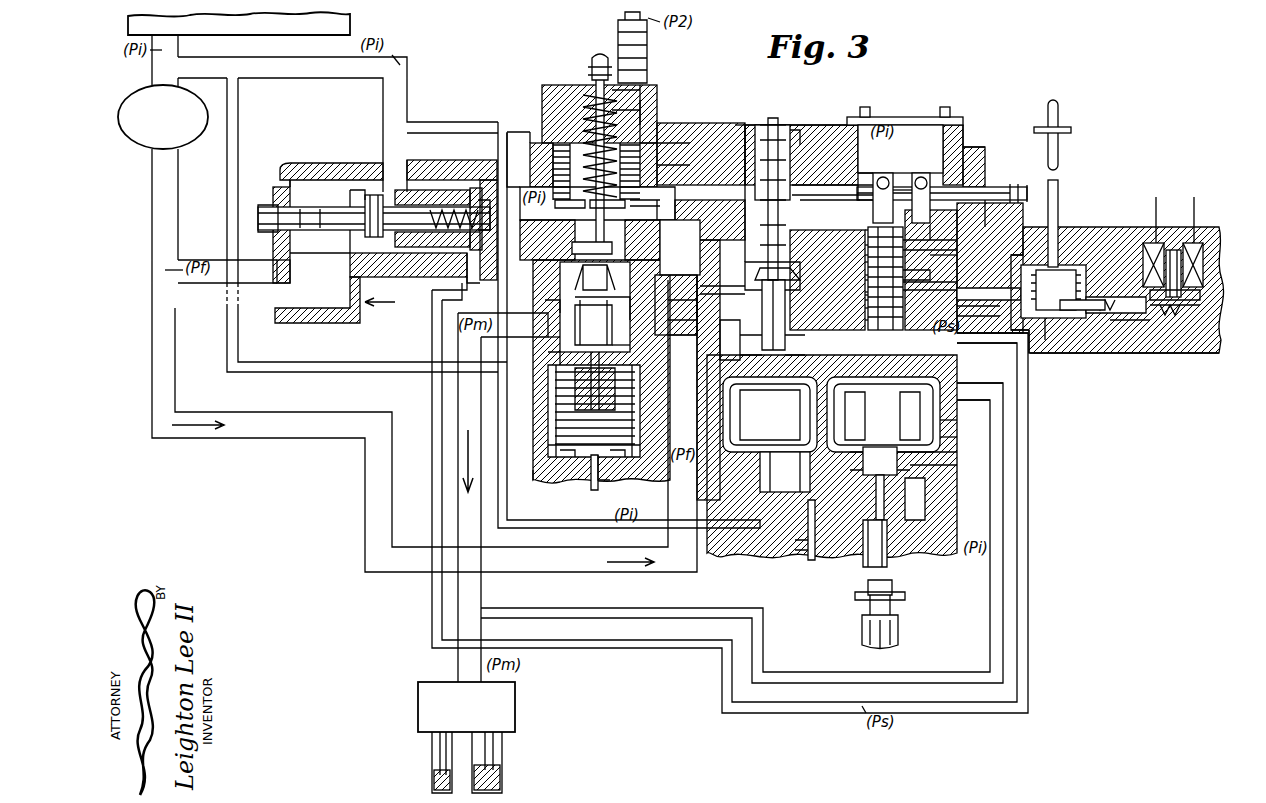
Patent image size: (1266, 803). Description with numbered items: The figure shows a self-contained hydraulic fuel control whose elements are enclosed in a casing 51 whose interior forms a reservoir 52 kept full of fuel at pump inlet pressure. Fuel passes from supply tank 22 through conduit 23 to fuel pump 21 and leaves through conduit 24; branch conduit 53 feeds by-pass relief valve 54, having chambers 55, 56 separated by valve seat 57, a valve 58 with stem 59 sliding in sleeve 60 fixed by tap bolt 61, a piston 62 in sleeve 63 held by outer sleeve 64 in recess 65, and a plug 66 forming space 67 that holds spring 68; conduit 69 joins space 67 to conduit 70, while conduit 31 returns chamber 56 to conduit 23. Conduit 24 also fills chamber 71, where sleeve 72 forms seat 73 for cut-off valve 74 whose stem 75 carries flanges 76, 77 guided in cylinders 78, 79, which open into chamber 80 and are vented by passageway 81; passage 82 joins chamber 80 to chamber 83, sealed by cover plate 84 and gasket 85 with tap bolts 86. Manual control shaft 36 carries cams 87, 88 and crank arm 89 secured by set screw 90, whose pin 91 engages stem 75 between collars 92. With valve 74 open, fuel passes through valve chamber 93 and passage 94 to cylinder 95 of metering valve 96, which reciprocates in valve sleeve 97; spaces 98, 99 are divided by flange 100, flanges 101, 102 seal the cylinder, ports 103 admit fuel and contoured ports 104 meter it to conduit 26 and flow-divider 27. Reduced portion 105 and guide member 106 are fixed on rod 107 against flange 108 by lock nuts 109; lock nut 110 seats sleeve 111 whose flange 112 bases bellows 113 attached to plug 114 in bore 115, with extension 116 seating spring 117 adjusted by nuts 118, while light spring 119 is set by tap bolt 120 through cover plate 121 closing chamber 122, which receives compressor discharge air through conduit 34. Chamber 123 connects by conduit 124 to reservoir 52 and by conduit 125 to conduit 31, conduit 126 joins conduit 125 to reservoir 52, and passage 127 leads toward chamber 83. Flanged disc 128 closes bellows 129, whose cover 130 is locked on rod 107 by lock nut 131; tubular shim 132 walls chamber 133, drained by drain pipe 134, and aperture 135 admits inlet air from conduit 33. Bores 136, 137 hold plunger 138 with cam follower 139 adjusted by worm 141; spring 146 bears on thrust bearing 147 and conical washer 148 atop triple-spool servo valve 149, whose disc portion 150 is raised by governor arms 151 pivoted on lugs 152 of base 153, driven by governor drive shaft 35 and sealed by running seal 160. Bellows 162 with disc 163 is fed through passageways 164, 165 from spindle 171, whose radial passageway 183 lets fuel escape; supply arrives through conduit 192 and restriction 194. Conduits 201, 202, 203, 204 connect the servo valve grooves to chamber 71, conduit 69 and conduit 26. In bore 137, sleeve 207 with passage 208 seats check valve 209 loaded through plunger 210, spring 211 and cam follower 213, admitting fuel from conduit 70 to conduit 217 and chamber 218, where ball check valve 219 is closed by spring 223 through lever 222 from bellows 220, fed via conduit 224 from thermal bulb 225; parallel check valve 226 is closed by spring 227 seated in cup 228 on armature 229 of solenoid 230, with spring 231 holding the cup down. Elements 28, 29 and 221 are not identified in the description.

The fuel pump 21 is at (155, 140).
The fuel supply tank 22 is at (239, 23).
The conduit 23 is at (162, 73).
The conduit 24 is at (152, 205).
The conduit 26 is at (458, 350).
The flow-divider 27 is at (515, 705).
The flow divider outlet 28 is at (502, 748).
The flow divider outlet 29 is at (432, 748).
The conduit 31 is at (285, 72).
The conduit 33 is at (592, 490).
The conduit 34 is at (618, 27).
The governor drive shaft 35 is at (892, 575).
The manual control shaft 36 is at (988, 188).
The casing 51 is at (765, 125).
The reservoir 52 is at (963, 530).
The branch conduit 53 is at (195, 300).
The by-pass relief valve 54 is at (346, 300).
The chamber 55 is at (388, 224).
The chamber 56 is at (390, 170).
The valve seat 57 is at (360, 175).
The valve 58 is at (365, 210).
The valve stem 59 is at (335, 232).
The sleeve 60 is at (274, 253).
The tap bolt 61 is at (285, 195).
The piston 62 is at (400, 247).
The sleeve 63 is at (435, 250).
The outer sleeve 64 is at (450, 185).
The cylindrical recess 65 is at (478, 190).
The plug 66 is at (492, 180).
The cylindrical space 67 is at (485, 278).
The spring 68 is at (478, 238).
The conduit 69 is at (432, 325).
The conduit 70 is at (1055, 340).
The chamber 71 is at (738, 325).
The sleeve 72 is at (772, 335).
The seat 73 is at (772, 315).
The cut-off valve 74 is at (777, 281).
The stem 75 is at (824, 291).
The annular flange 76 is at (826, 250).
The annular flange 77 is at (798, 130).
The cylinder 78 is at (825, 275).
The cylinder 79 is at (800, 130).
The chamber 80 is at (831, 183).
The passageway 81 is at (784, 125).
The horizontal passage 82 is at (865, 173).
The chamber 83 is at (925, 125).
The cover plate 84 is at (905, 117).
The gasket 85 is at (970, 140).
The tap bolts 86 is at (867, 107).
The cam 87 is at (960, 243).
The cam 88 is at (923, 187).
The crank arm 89 is at (892, 187).
The set screw 90 is at (880, 175).
The pin 91 is at (827, 232).
The fixed collars 92 is at (800, 190).
The valve chamber 93 is at (768, 273).
The passage 94 is at (722, 279).
The cylinder 95 is at (462, 289).
The main fuel metering valve 96 is at (593, 321).
The valve sleeve 97 is at (540, 325).
The annular space 98 is at (655, 290).
The annular space 99 is at (682, 347).
The flange 100 is at (685, 319).
The upper flange 101 is at (632, 272).
The lower flange 102 is at (555, 358).
The ports 103 is at (552, 305).
The ports 104 is at (555, 343).
The reduced portion 105 is at (595, 307).
The cylindrical guide member 106 is at (590, 240).
The rod 107 is at (630, 358).
The flange 108 is at (630, 345).
The lock nuts 109 is at (615, 210).
The lock nut 110 is at (585, 210).
The sleeve 111 is at (649, 196).
The flange 112 is at (673, 210).
The pressure-responsive bellows 113 is at (655, 170).
The hollow cylindrical plug 114 is at (575, 100).
The bore 115 is at (670, 135).
The tubular extension 116 is at (681, 145).
The spring 117 is at (660, 110).
The locked nuts 118 is at (640, 95).
The light spring 119 is at (545, 130).
The tap bolt 120 is at (600, 57).
The cover plate 121 is at (655, 118).
The chamber 122 is at (582, 95).
The chamber 123 is at (710, 205).
The conduit 124 is at (708, 355).
The conduit 125 is at (530, 150).
The conduit 126 is at (518, 120).
The passage 127 is at (745, 125).
The flanged disc 128 is at (540, 480).
The pressure-responsive bellows 129 is at (550, 445).
The cover 130 is at (548, 390).
The lock nut 131 is at (625, 385).
The tubular shim 132 is at (548, 415).
The chamber 133 is at (632, 420).
The drain pipe 134 is at (238, 120).
The aperture 135 is at (605, 478).
The cylindrical bore 136 is at (866, 243).
The cylindrical bore 137 is at (935, 265).
The plunger 138 is at (866, 275).
The cam follower 139 is at (868, 232).
The worm 141 is at (866, 258).
The spring 146 is at (866, 290).
The annular thrust bearing 147 is at (866, 305).
The conical washer 148 is at (866, 318).
The triple-spool servo valve 149 is at (883, 405).
The annular disc portion 150 is at (950, 450).
The L-shaped arm 151 is at (965, 420).
The lugs 152 is at (965, 437).
The base 153 is at (925, 490).
The running seal 160 is at (788, 472).
The pressure responsive bellows 162 is at (880, 461).
The disc 163 is at (950, 465).
The central passageway 164 is at (874, 497).
The radial passageway 165 is at (863, 540).
The rotating spindle 171 is at (767, 553).
The radial passageway 183 is at (725, 418).
The conduit 192 is at (805, 560).
The restriction 194 is at (812, 560).
The conduit 201 is at (830, 300).
The conduit 202 is at (987, 358).
The conduit 203 is at (980, 398).
The conduit 204 is at (548, 610).
The sleeve 207 is at (992, 344).
The central passage 208 is at (978, 316).
The sleeve check valve 209 is at (989, 298).
The plunger 210 is at (957, 257).
The spring 211 is at (960, 285).
The cam follower 213 is at (990, 235).
The conduit 217 is at (1030, 283).
The chamber 218 is at (1072, 318).
The ball check valve 219 is at (1120, 330).
The pressure responsive bellows 220 is at (1053, 291).
The passage 221 is at (1038, 353).
The lever 222 is at (1095, 297).
The spring 223 is at (1110, 298).
The conduit 224 is at (1058, 200).
The thermal bulb 225 is at (1060, 118).
The second check valve 226 is at (1205, 353).
The spring 227 is at (1200, 312).
The cup 228 is at (1200, 295).
The armature 229 is at (1174, 260).
The solenoid 230 is at (1222, 240).
The spring 231 is at (1192, 200).